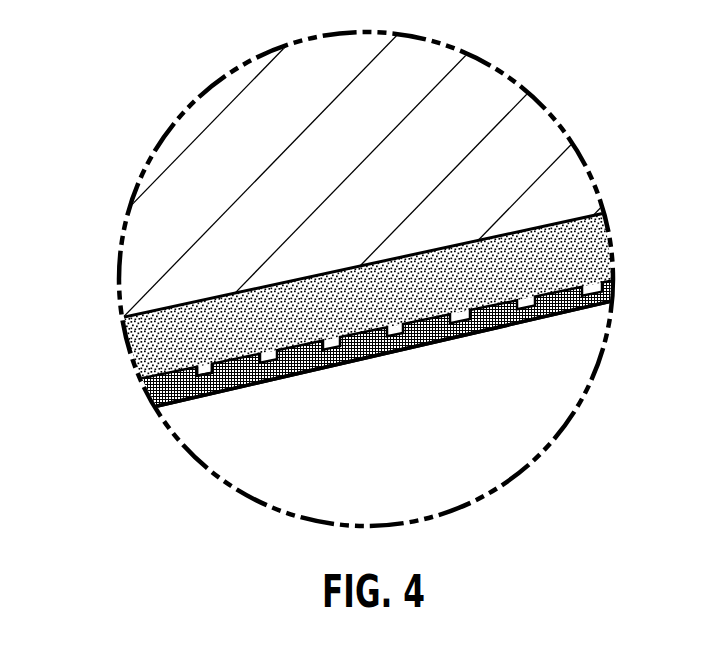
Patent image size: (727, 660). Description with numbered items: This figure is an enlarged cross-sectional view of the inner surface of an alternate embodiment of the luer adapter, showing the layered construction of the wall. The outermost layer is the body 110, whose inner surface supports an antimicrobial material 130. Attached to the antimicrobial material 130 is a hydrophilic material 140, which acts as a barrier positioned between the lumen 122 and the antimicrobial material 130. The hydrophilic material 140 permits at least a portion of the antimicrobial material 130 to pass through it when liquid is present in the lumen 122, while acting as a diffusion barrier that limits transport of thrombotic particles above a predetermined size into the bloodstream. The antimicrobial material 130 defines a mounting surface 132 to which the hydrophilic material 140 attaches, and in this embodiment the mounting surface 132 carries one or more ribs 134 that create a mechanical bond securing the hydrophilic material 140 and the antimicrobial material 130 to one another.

The body 110 is at (472, 105).
The lumen 122 is at (463, 432).
The antimicrobial material 130 is at (588, 242).
The mounting surface 132 is at (157, 377).
The ribs 134 is at (198, 377).
The hydrophilic material 140 is at (303, 363).